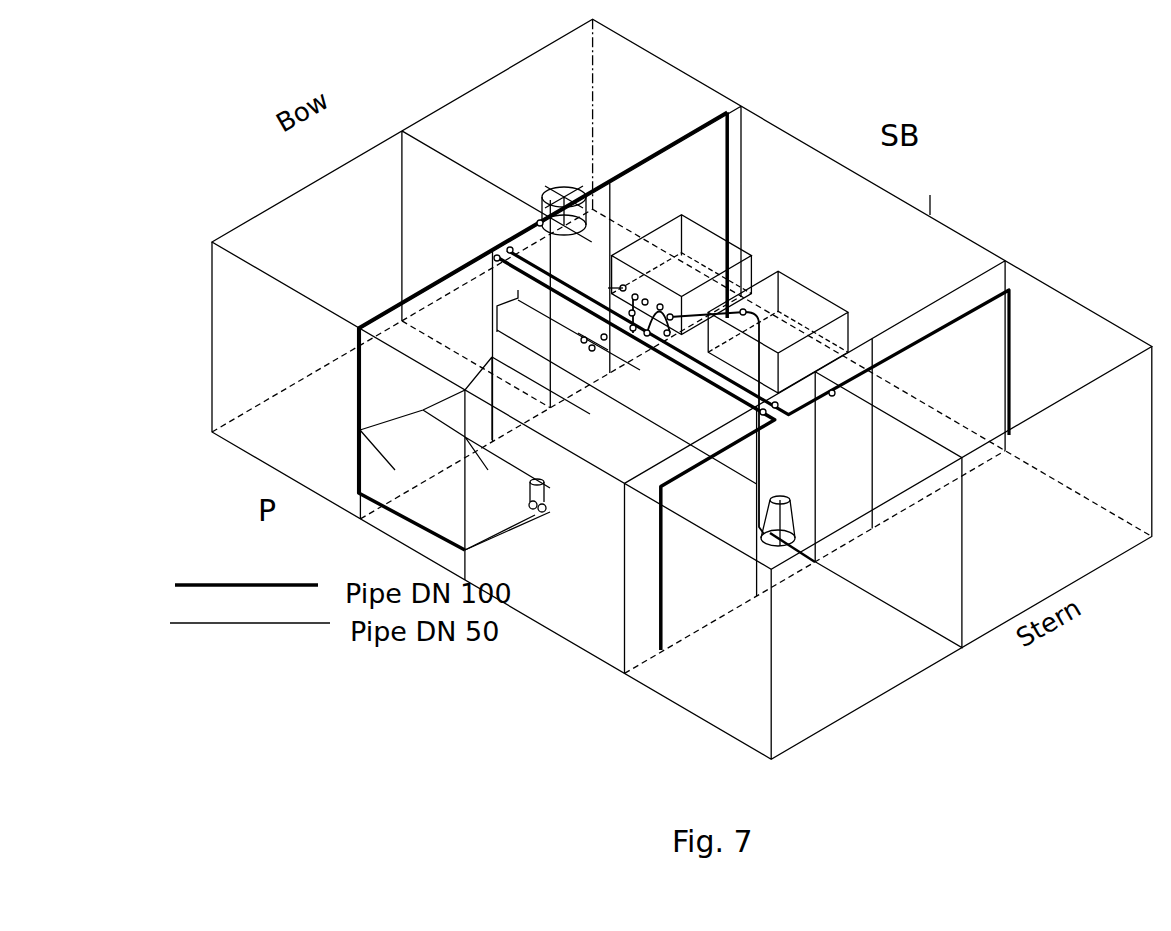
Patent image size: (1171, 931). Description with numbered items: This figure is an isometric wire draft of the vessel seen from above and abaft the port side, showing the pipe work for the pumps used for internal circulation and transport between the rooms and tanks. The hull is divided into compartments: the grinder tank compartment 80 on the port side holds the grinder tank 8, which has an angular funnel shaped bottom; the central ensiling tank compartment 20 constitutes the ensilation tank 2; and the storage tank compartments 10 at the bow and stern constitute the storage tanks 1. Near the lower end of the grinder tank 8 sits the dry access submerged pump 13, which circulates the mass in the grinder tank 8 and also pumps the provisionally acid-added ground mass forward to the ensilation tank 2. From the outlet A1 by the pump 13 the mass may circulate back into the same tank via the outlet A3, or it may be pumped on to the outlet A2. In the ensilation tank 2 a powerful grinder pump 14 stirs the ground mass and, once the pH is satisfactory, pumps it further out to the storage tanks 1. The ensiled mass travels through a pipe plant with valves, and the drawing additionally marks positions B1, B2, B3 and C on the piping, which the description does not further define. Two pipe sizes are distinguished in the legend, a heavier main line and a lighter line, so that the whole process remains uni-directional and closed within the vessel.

The storage tank compartment 10 is at (682, 389).
The storage tank 1 is at (682, 389).
The grinder tank compartment 80 is at (475, 453).
The grinder tank 8 is at (475, 453).
The ensiling tank compartment 20 is at (684, 381).
The ensilation tank 2 is at (684, 381).
The dry access submerged pump 13 is at (521, 494).
The grinder pump 14 is at (770, 540).
The ejector B1 is at (783, 510).
The valve arrangement B2 is at (692, 407).
The suction/bellmouth box B3 is at (677, 448).
The outlet A1 is at (509, 538).
The outlet A2 is at (609, 353).
The outlet A3 is at (514, 326).
The connection C is at (607, 288).